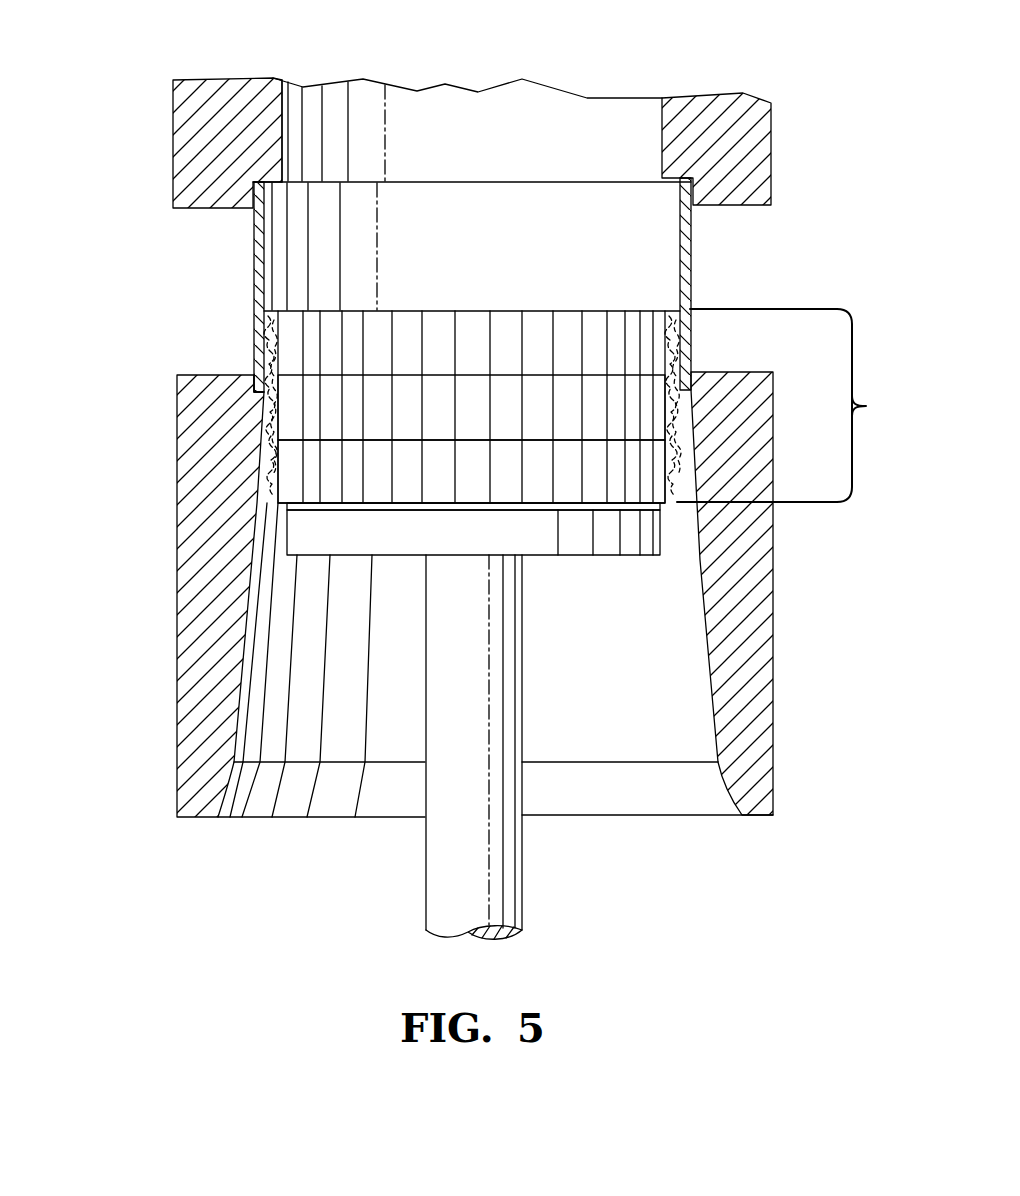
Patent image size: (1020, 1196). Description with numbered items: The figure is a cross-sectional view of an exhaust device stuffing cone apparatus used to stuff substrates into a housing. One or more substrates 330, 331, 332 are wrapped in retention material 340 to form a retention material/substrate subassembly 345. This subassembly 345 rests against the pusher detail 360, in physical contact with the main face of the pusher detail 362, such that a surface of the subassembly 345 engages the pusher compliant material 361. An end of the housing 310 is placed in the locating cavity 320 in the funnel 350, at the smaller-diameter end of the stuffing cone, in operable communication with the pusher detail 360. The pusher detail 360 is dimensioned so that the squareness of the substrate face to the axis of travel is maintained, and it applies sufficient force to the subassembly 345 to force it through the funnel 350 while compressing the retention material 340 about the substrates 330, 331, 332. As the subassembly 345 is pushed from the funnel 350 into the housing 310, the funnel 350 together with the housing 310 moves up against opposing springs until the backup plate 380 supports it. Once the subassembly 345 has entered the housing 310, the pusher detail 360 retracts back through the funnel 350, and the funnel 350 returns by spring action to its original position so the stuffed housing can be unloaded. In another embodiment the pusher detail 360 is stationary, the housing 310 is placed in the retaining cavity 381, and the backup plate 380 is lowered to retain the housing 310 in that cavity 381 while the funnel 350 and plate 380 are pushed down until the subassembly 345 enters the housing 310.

The housing 310 is at (254, 250).
The locating cavity 320 is at (260, 390).
The substrate 330 is at (658, 365).
The substrate 331 is at (660, 412).
The substrate 332 is at (662, 476).
The retention material 340 is at (272, 465).
The retention material/substrate subassembly 345 is at (794, 405).
The funnel 350 is at (177, 704).
The pusher detail 360 is at (522, 860).
The pusher compliant material 361 is at (628, 508).
The pusher detail main face 362 is at (612, 503).
The backup plate 380 is at (173, 131).
The retaining cavity 381 is at (268, 182).